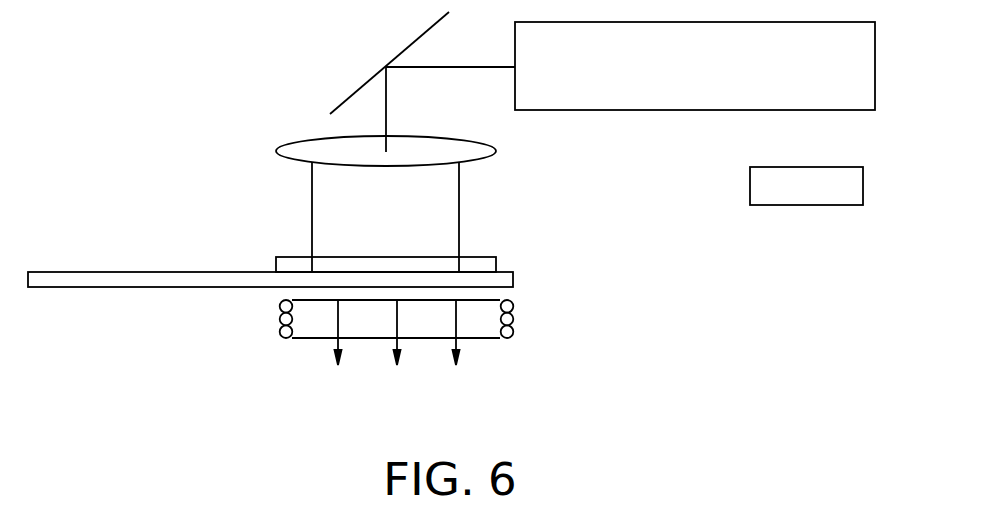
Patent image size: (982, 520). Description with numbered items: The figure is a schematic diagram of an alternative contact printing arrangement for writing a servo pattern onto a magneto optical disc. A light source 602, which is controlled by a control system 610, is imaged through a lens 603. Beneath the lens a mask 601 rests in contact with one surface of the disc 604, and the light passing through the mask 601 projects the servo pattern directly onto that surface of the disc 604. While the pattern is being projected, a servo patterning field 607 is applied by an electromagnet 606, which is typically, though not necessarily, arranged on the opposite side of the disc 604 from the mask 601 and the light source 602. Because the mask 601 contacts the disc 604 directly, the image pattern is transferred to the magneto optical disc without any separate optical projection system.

The mask 601 is at (497, 262).
The light source 602 is at (652, 110).
The lens 603 is at (277, 152).
The disc 604 is at (515, 280).
The electromagnet 606 is at (512, 327).
The servo patterning field 607 is at (427, 355).
The control system 610 is at (760, 110).